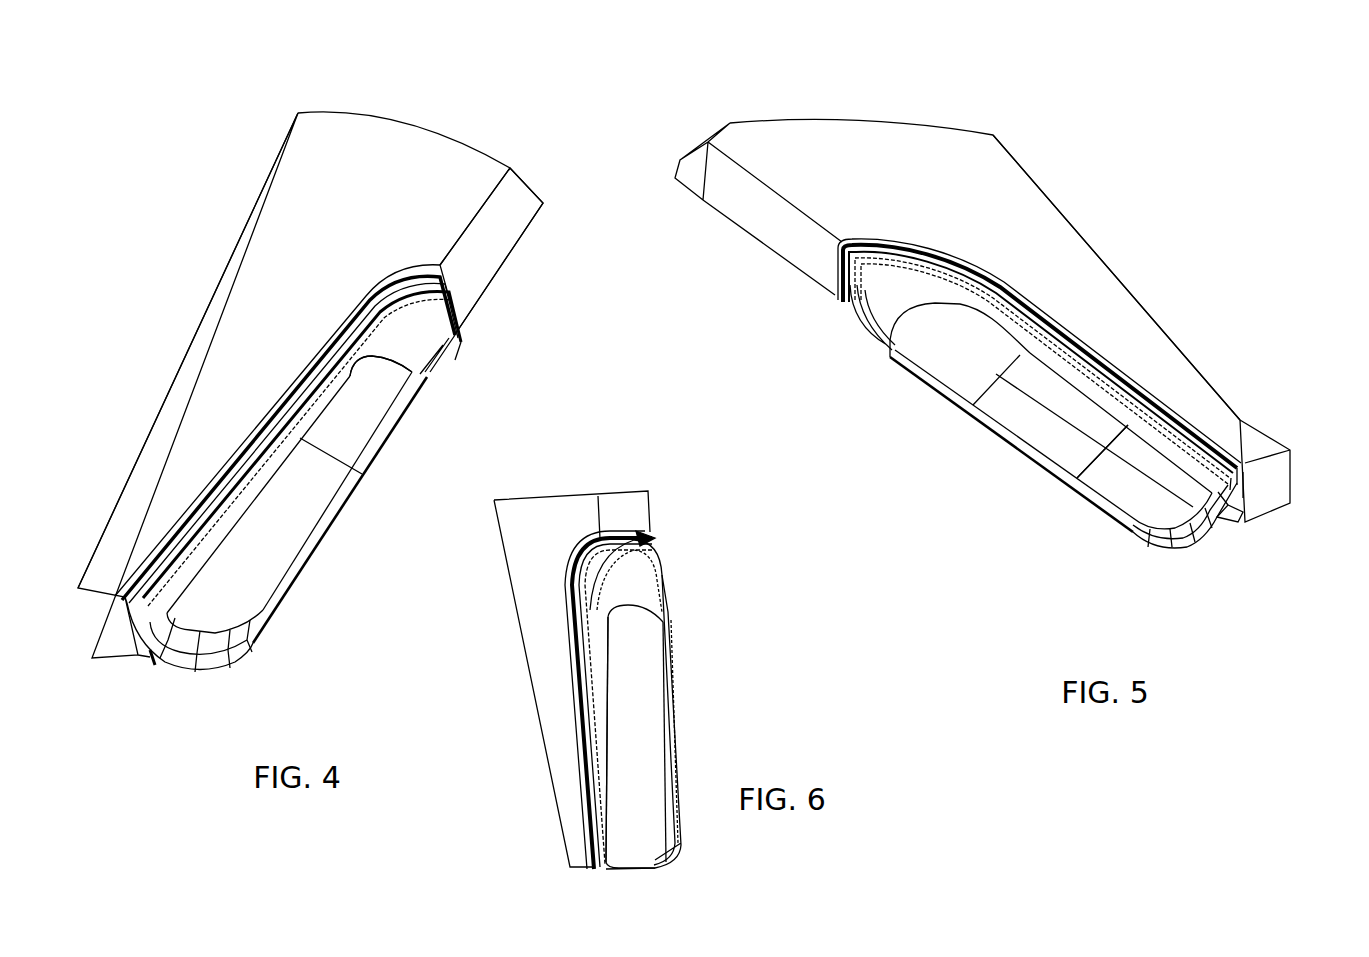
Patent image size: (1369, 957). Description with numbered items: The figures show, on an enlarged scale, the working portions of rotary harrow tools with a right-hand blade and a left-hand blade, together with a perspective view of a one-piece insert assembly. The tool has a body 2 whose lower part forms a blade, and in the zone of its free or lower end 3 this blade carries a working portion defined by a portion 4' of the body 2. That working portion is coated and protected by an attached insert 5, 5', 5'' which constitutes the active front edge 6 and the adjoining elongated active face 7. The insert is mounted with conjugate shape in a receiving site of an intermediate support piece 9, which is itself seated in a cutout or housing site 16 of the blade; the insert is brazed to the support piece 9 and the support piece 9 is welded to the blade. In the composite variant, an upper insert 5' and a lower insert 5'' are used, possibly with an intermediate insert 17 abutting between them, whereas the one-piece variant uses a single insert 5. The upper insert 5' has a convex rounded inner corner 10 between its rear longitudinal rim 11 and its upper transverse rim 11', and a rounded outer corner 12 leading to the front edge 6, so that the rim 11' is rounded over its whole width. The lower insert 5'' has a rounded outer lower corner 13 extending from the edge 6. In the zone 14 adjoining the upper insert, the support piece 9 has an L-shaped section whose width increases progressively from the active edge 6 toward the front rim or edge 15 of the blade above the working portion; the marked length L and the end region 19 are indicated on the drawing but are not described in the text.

In FIG. 4, the body 2 is at (311, 148).
In FIG. 5, the body 2 is at (945, 155).
In FIG. 5, the free or lower end 3 is at (1263, 538).
In FIG. 4, the portion of body 4' is at (188, 350).
In FIG. 5, the portion of body 4' is at (1116, 277).
In FIG. 6, the single insert 5 is at (681, 742).
In FIG. 4, the upper insert 5' is at (349, 491).
In FIG. 5, the upper insert 5' is at (1014, 434).
In FIG. 4, the lower insert 5'' is at (248, 624).
In FIG. 5, the lower insert 5'' is at (1089, 496).
In FIG. 4, the active front edge 6 is at (331, 541).
In FIG. 5, the active front edge 6 is at (1041, 484).
In FIG. 6, the active front edge 6 is at (678, 669).
In FIG. 4, the active adjoining elongated face 7 is at (293, 473).
In FIG. 5, the active adjoining elongated face 7 is at (1043, 402).
In FIG. 6, the active adjoining elongated face 7 is at (646, 745).
In FIG. 4, the intermediate support piece 9 is at (165, 660).
In FIG. 5, the intermediate support piece 9 is at (1207, 537).
In FIG. 6, the intermediate support piece 9 is at (584, 649).
In FIG. 4, the rounded inner corner 10 is at (398, 368).
In FIG. 5, the rounded inner corner 10 is at (930, 307).
In FIG. 6, the rounded inner corner 10 is at (603, 617).
In FIG. 4, the rear longitudinal rim 11 is at (279, 444).
In FIG. 5, the rear longitudinal rim 11 is at (1043, 368).
In FIG. 6, the rear longitudinal rim 11 is at (558, 705).
In FIG. 5, the upper transverse rim 11' is at (858, 440).
In FIG. 4, the rounded outer corner 12 is at (398, 368).
In FIG. 5, the rounded outer corner 12 is at (943, 275).
In FIG. 6, the rounded outer corner 12 is at (649, 611).
In FIG. 4, the rounded outer lower corner 13 is at (253, 650).
In FIG. 5, the rounded outer lower corner 13 is at (1153, 523).
In FIG. 4, the zone adjoining upper insert 14 is at (459, 346).
In FIG. 5, the zone adjoining upper insert 14 is at (845, 328).
In FIG. 6, the zone adjoining upper insert 14 is at (646, 567).
In FIG. 4, the front rim or edge 15 is at (495, 238).
In FIG. 6, the front rim or edge 15 is at (657, 501).
In FIG. 4, the housing site 16 is at (323, 313).
In FIG. 5, the housing site 16 is at (1005, 275).
In FIG. 5, the intermediate insert 17 is at (1040, 430).
In FIG. 5, the end face 19 is at (1228, 463).
In FIG. 6, the length dimension L is at (610, 582).